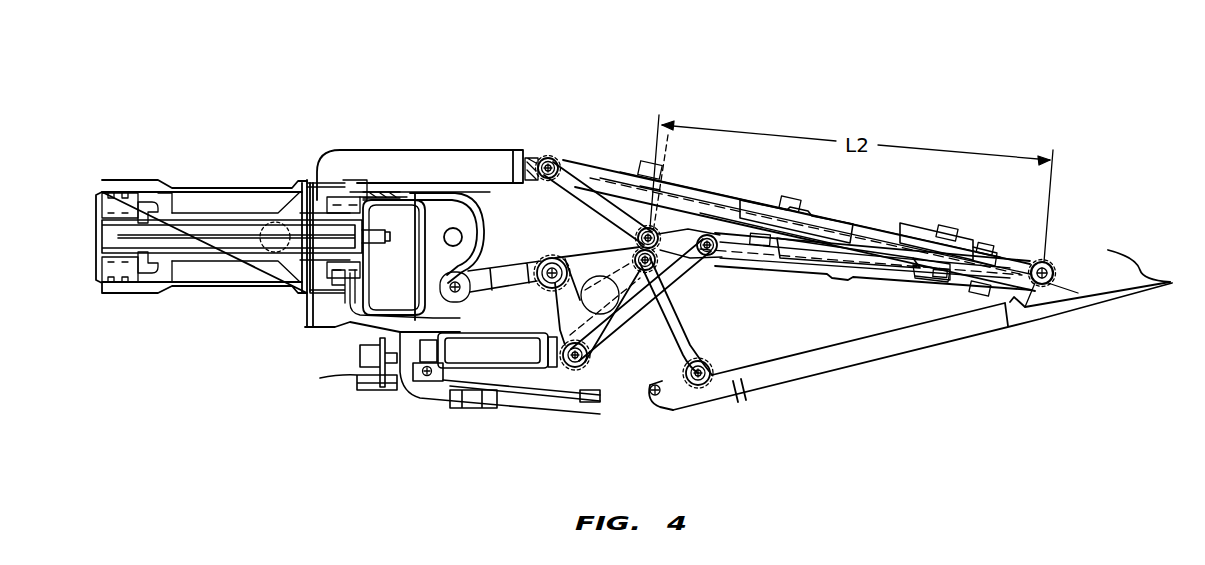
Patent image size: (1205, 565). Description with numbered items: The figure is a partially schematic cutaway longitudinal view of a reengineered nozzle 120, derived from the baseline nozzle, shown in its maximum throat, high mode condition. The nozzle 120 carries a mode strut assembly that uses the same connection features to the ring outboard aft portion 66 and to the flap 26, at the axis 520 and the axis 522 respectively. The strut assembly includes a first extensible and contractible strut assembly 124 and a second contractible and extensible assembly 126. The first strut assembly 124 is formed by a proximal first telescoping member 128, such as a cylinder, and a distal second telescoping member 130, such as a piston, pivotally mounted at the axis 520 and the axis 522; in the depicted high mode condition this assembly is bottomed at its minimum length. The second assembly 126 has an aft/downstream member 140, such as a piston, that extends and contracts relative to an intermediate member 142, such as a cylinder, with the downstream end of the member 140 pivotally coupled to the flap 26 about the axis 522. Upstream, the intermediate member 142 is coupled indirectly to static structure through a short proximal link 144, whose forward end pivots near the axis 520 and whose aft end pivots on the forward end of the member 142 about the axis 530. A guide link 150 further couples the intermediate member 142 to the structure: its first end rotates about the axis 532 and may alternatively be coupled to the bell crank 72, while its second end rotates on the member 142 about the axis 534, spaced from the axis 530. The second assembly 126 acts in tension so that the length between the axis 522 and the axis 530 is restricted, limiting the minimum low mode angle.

The nozzle 120 is at (362, 126).
The ring outboard aft portion 66 is at (490, 165).
The axis 520 is at (555, 158).
The first telescoping member 128 is at (620, 165).
The axis 530 is at (656, 234).
The first extensible and contractible strut assembly 124 is at (806, 188).
The second telescoping member 130 is at (905, 236).
The proximal link 144 is at (600, 200).
The bell crank 72 is at (560, 308).
The axis 534 is at (712, 257).
The intermediate member 142 is at (752, 268).
The second contractible and extensible assembly 126 is at (790, 284).
The guide link 150 is at (647, 313).
The axis 532 is at (548, 340).
The aft/downstream member 140 is at (920, 263).
The flap 26 is at (990, 318).
The axis 522 is at (1043, 283).